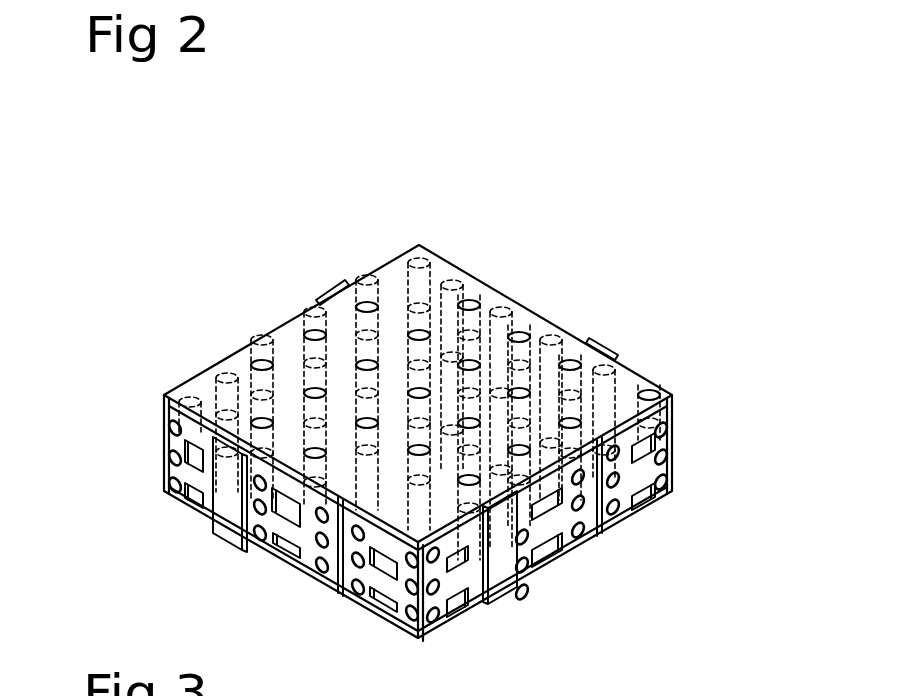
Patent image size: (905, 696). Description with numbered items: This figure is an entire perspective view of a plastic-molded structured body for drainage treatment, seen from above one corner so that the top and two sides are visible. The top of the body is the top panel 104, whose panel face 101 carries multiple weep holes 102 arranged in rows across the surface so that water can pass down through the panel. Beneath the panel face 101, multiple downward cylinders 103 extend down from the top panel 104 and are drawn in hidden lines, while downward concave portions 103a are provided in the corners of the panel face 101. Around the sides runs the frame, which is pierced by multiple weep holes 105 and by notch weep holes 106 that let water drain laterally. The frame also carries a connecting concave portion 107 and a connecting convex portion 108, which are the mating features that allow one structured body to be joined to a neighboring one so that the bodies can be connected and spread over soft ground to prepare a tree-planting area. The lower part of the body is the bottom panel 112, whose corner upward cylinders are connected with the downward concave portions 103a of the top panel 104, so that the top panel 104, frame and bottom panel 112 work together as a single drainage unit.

The panel face 101 is at (393, 387).
The weep holes 102 is at (465, 300).
The downward cylinder 103 is at (232, 373).
The downward concave portion 103a is at (408, 247).
The top panel 104 is at (496, 316).
The weep holes 105 is at (163, 481).
The notch weep holes 106 is at (203, 510).
The connecting concave portion 107 is at (338, 593).
The connecting convex portion 108 is at (333, 292).
The bottom panel 112 is at (558, 579).